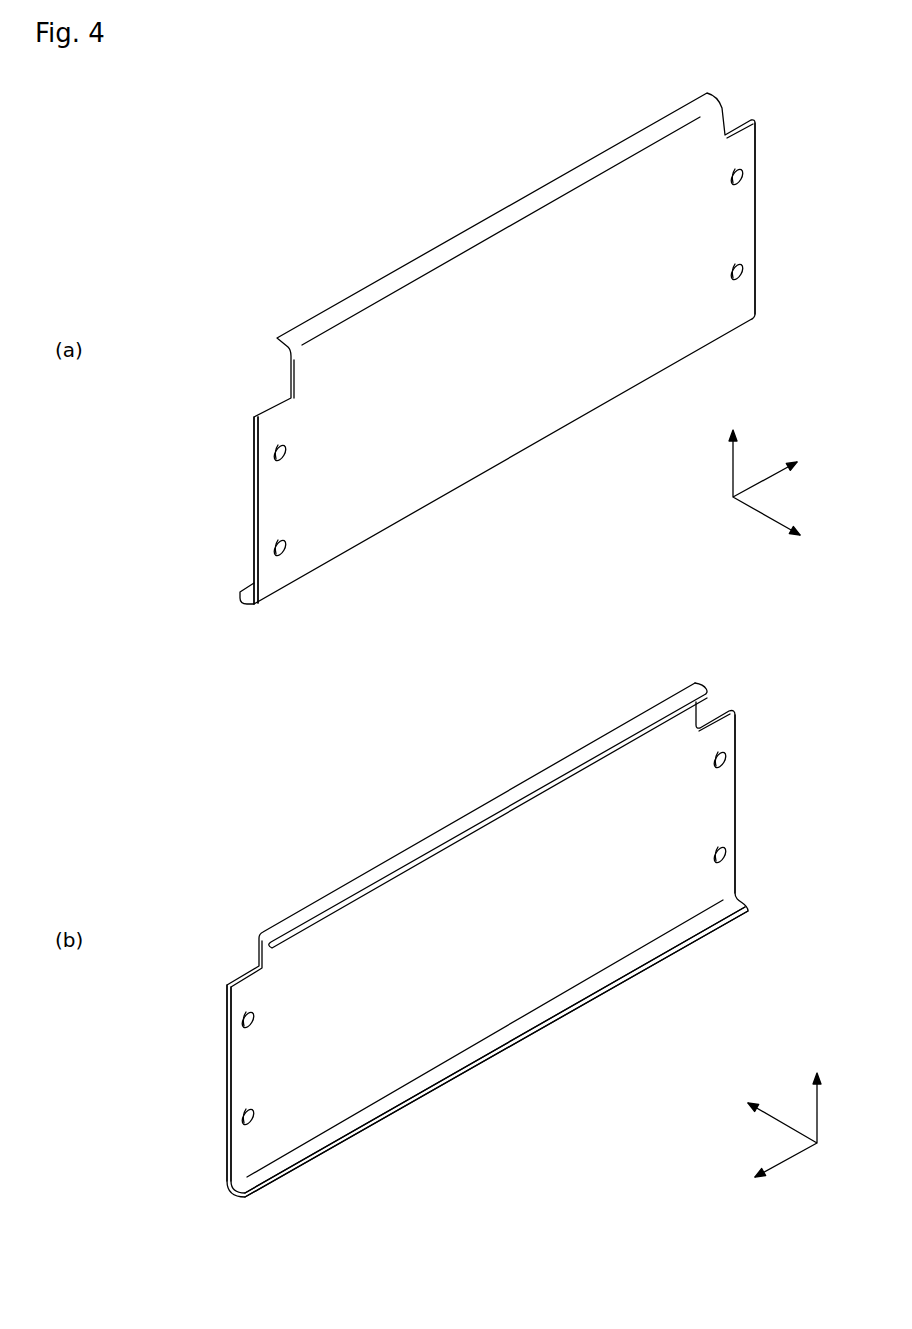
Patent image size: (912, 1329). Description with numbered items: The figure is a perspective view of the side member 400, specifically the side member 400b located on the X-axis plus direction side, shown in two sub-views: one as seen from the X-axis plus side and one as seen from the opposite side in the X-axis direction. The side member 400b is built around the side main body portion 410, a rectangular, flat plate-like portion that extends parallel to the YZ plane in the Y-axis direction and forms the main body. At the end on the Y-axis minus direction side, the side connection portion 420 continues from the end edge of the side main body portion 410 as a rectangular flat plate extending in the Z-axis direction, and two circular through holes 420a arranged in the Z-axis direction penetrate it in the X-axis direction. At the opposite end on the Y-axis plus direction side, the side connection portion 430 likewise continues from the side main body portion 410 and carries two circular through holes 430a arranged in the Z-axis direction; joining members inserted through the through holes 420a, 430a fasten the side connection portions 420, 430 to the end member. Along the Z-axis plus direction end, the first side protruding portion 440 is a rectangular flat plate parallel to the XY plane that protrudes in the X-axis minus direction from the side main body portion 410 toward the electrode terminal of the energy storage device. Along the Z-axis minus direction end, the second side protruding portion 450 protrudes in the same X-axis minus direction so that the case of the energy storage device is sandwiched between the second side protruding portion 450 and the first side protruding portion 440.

The side member 400 is at (220, 675).
The side member on the X-axis plus direction side 400b is at (225, 838).
The side main body portion 410 is at (545, 415).
The side connection portion 420 is at (268, 510).
The through hole 420a is at (275, 452).
The side connection portion 430 is at (745, 227).
The through hole 430a is at (743, 172).
The first side protruding portion 440 is at (475, 228).
The second side protruding portion 450 is at (242, 582).